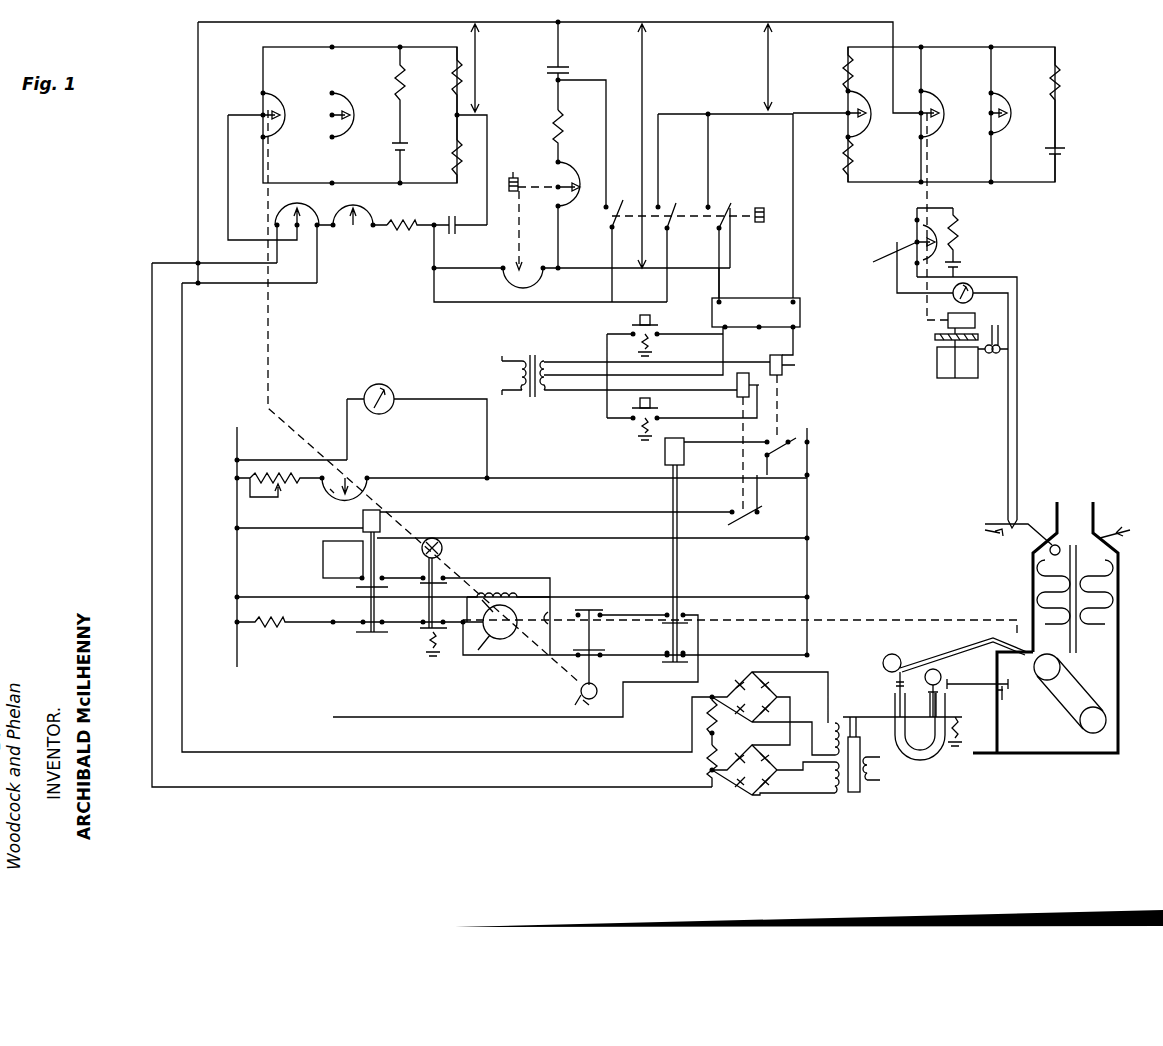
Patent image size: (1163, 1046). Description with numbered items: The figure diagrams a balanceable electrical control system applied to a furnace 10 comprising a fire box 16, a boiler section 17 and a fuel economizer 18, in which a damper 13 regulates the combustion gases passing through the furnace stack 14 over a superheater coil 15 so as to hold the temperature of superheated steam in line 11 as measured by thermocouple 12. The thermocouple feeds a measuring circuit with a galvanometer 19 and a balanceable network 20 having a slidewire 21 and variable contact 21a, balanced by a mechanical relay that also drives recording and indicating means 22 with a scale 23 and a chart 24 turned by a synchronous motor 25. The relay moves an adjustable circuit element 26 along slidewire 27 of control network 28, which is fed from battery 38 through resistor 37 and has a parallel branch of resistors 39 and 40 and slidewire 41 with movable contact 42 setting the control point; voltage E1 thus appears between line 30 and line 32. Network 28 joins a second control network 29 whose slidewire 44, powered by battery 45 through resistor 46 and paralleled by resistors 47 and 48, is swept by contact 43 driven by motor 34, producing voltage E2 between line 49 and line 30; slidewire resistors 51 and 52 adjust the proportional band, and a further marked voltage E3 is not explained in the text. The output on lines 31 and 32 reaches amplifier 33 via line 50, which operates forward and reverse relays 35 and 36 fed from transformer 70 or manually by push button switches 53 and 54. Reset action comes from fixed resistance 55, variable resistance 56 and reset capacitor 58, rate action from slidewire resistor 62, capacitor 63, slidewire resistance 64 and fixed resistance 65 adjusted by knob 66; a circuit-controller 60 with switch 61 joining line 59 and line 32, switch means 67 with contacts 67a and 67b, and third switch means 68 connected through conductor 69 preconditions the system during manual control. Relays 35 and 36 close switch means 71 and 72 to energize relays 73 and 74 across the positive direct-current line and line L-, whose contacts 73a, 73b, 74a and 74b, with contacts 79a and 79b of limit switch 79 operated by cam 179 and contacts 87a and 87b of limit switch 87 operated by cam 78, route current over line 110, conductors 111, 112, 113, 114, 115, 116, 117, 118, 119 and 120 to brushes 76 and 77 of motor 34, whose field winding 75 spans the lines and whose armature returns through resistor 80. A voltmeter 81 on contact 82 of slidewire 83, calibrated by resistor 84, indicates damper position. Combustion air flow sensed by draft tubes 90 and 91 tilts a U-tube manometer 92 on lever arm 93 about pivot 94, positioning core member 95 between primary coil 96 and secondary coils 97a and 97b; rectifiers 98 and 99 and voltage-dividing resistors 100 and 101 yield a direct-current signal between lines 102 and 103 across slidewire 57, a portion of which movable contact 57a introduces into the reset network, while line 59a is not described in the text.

The furnace 10 is at (997, 712).
The line 11 is at (1015, 522).
The thermocouple 12 is at (1012, 535).
The damper 13 is at (1085, 648).
The furnace stack 14 is at (1033, 572).
The superheater coil 15 is at (1045, 592).
The fire box 16 is at (1037, 723).
The boiler section 17 is at (1060, 718).
The fuel economizer 18 is at (1105, 612).
The galvanometer 19 is at (970, 284).
The balanceable network 20 is at (958, 222).
The slidewire 21 is at (917, 220).
The variable contact 21a is at (899, 267).
The recording and indicating means 22 is at (920, 389).
The scale 23 is at (935, 337).
The chart 24 is at (965, 377).
The synchronous motor 25 is at (1003, 351).
The adjustable circuit element 26 is at (938, 108).
The slidewire 27 is at (930, 95).
The control network 28 is at (975, 36).
The second control network 29 is at (380, 45).
The line 30 is at (720, 28).
The line 31 is at (732, 247).
The line 32 is at (790, 150).
The amplifier 33 is at (768, 321).
The motor 34 is at (500, 630).
The forward relay 35 is at (737, 392).
The reverse relay 36 is at (790, 360).
The resistor 37 is at (1060, 86).
The battery 38 is at (1062, 147).
The resistor 39 is at (845, 72).
The resistor 40 is at (848, 158).
The slidewire 41 is at (866, 100).
The movable contact 42 is at (850, 112).
The movable contact 43 is at (276, 116).
The slidewire 44 is at (270, 112).
The battery 45 is at (406, 145).
The resistor 46 is at (404, 80).
The resistor 47 is at (455, 72).
The resistor 48 is at (452, 160).
The line 49 is at (487, 118).
The line 50 is at (724, 283).
The slidewire resistor 51 is at (1004, 98).
The slidewire resistor 52 is at (348, 100).
The push button switch 53 is at (632, 326).
The push button switch 54 is at (632, 410).
The fixed resistance 55 is at (405, 228).
The variable resistance 56 is at (370, 210).
The slidewire 57 is at (318, 210).
The movable contact 57a is at (296, 208).
The reset capacitor 58 is at (462, 202).
The line 59 is at (434, 290).
The lead 59a is at (458, 262).
The circuit-controller 60 is at (700, 237).
The switch 61 is at (668, 234).
The slidewire resistor 62 is at (540, 282).
The capacitor 63 is at (545, 66).
The slidewire resistance 64 is at (574, 168).
The fixed resistance 65 is at (555, 120).
The knob 66 is at (532, 208).
The switch means 67 is at (728, 205).
The contact 67a is at (760, 192).
The contact 67b is at (708, 200).
The third switch means 68 is at (624, 236).
The conductor 69 is at (606, 125).
The transformer 70 is at (532, 355).
The switch means 71 is at (745, 520).
The switch means 72 is at (775, 452).
The relay 73 is at (380, 522).
The contact 73a is at (373, 564).
The contact 73b is at (372, 638).
The relay 74 is at (684, 455).
The contact 74a is at (672, 630).
The contact 74b is at (678, 668).
The field winding 75 is at (518, 580).
The brush 76 is at (516, 615).
The brush 77 is at (477, 644).
The cam 78 is at (578, 700).
The limit switch 79 is at (425, 575).
The contact 79a is at (445, 565).
The contact 79b is at (430, 658).
The resistor 80 is at (275, 628).
The voltmeter 81 is at (392, 392).
The movable contact 82 is at (360, 487).
The slidewire 83 is at (330, 495).
The voltage-dropping resistor 84 is at (285, 497).
The limit switch 87 is at (585, 665).
The contact 87a is at (587, 607).
The contact 87b is at (598, 645).
The draft tube 90 is at (958, 648).
The draft tube 91 is at (975, 682).
The tilting U-tube manometer 92 is at (932, 755).
The lever arm 93 is at (875, 712).
The pivot 94 is at (926, 712).
The core member 95 is at (862, 750).
The primary coil 96 is at (885, 782).
The secondary coil 97a is at (832, 730).
The secondary coil 97b is at (832, 782).
The full wave rectifier 98 is at (733, 688).
The full wave rectifier 99 is at (733, 780).
The voltage-dividing resistor 100 is at (708, 716).
The voltage-dividing resistor 101 is at (708, 758).
The line 102 is at (182, 344).
The line 103 is at (150, 304).
The line 110 is at (758, 632).
The conductor 111 is at (615, 658).
The conductor 112 is at (515, 640).
The conductor 113 is at (554, 642).
The conductor 114 is at (622, 612).
The conductor 115 is at (523, 717).
The conductor 116 is at (730, 541).
The conductor 117 is at (398, 582).
The conductor 118 is at (482, 595).
The conductor 119 is at (455, 612).
The conductor 120 is at (408, 628).
The cam 179 is at (444, 545).
The voltage E1 is at (769, 67).
The voltage E2 is at (471, 68).
The voltage E3 is at (646, 146).
The direct-current power line L- is at (276, 547).